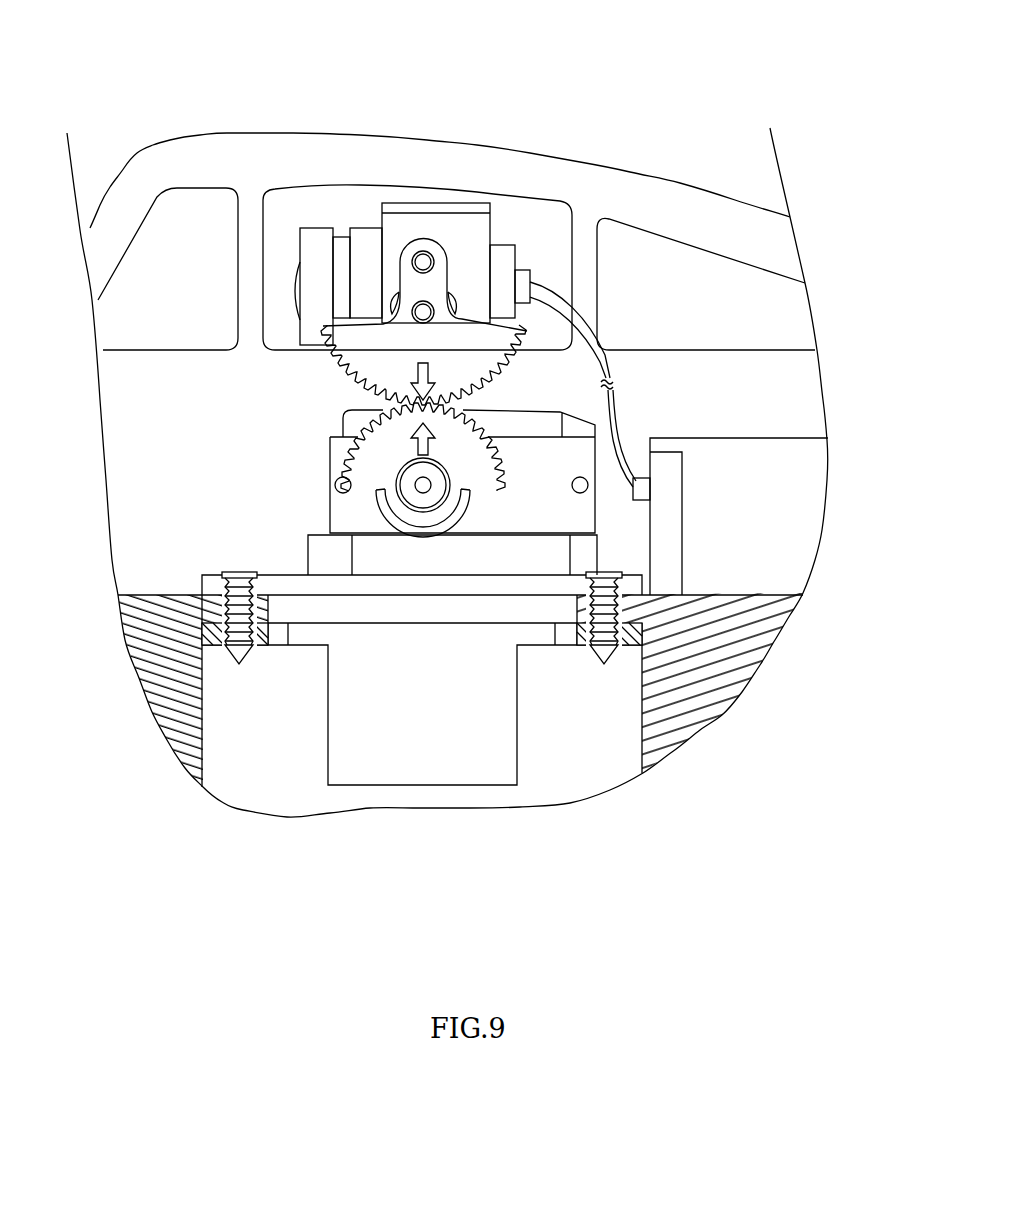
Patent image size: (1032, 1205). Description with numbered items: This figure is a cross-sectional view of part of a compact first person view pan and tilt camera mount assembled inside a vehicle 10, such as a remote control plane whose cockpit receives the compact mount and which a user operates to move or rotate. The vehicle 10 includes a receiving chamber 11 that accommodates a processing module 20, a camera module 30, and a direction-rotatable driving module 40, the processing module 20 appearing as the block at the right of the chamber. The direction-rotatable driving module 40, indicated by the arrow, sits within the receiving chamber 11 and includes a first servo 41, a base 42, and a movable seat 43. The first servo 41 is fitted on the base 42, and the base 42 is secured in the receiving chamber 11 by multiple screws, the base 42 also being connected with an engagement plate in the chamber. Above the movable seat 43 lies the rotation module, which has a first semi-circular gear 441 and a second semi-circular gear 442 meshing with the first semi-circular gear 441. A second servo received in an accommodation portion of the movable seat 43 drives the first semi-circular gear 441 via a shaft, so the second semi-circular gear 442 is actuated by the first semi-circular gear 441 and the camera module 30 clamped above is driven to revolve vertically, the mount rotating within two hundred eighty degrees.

The vehicle 10 is at (712, 203).
The receiving chamber 11 is at (153, 472).
The processing module 20 is at (803, 445).
The camera module 30 is at (438, 203).
The direction-rotatable driving module 40 is at (379, 319).
The first servo 41 is at (358, 762).
The base 42 is at (203, 578).
The movable seat 43 is at (330, 457).
The first semi-circular gear 441 is at (480, 467).
The second semi-circular gear 442 is at (347, 332).